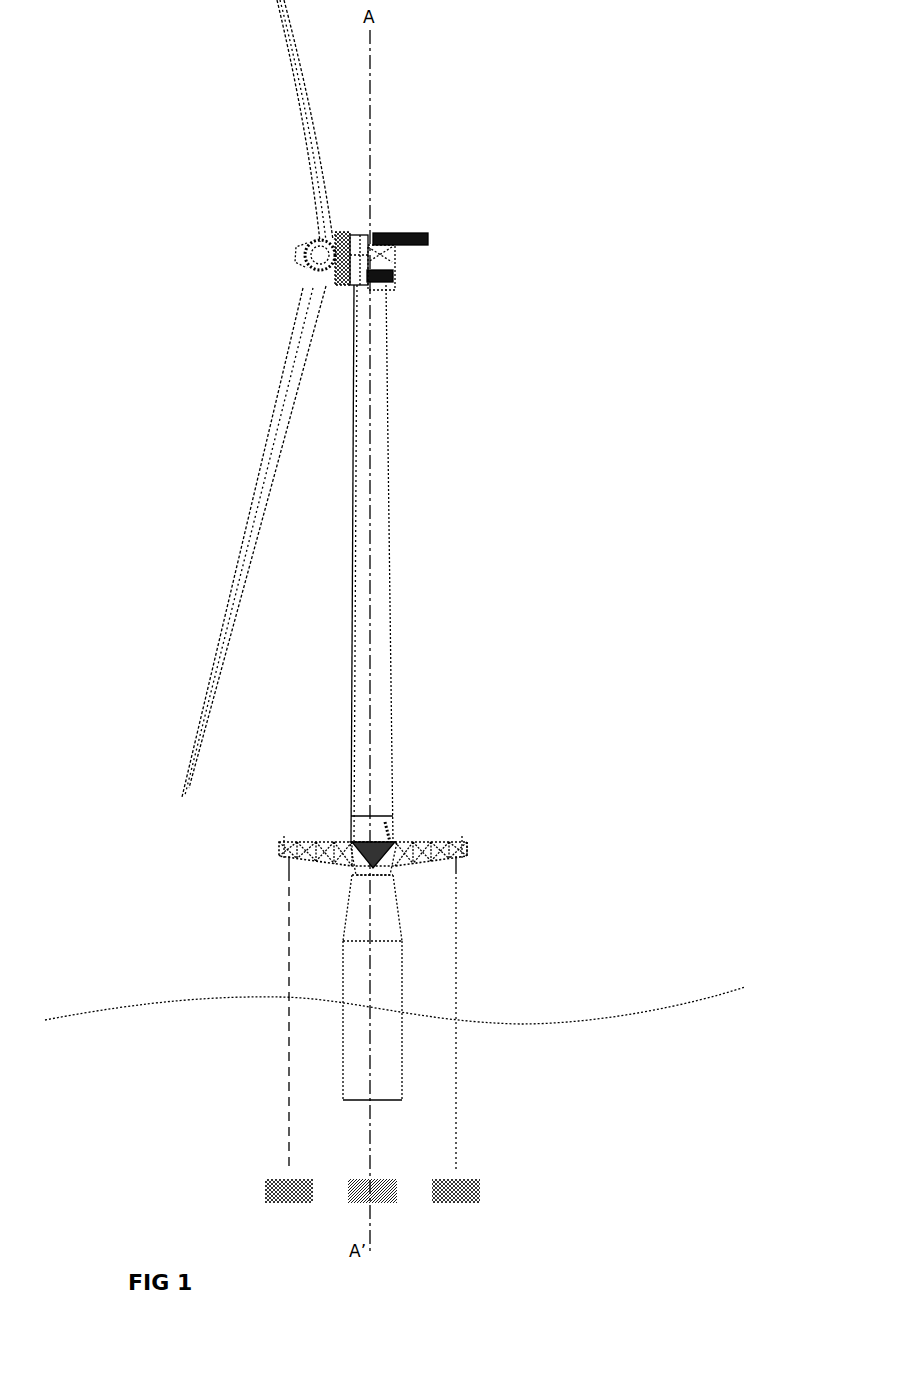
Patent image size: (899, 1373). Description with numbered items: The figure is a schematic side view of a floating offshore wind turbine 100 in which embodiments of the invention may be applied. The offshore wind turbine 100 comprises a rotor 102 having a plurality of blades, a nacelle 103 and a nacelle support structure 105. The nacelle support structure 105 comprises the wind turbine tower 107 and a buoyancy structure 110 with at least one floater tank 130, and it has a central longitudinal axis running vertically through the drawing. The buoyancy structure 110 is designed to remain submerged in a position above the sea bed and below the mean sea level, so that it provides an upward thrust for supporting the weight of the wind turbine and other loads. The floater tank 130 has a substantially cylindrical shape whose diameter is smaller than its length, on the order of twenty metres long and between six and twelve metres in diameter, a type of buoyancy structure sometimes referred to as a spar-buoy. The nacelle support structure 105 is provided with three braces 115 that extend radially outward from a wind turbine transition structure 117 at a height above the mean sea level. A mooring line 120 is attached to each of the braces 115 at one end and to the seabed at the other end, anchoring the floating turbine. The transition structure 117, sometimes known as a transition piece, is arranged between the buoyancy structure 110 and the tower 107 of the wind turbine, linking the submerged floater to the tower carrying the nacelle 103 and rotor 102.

The offshore wind turbine 100 is at (618, 199).
The rotor 102 is at (258, 246).
The nacelle 103 is at (386, 212).
The nacelle support structure 105 is at (500, 740).
The wind turbine tower 107 is at (391, 508).
The buoyancy structure 110 is at (209, 938).
The braces 115 is at (313, 840).
The transition structure 117 is at (393, 835).
The mooring line 120 is at (290, 942).
The floater tank 130 is at (402, 1077).